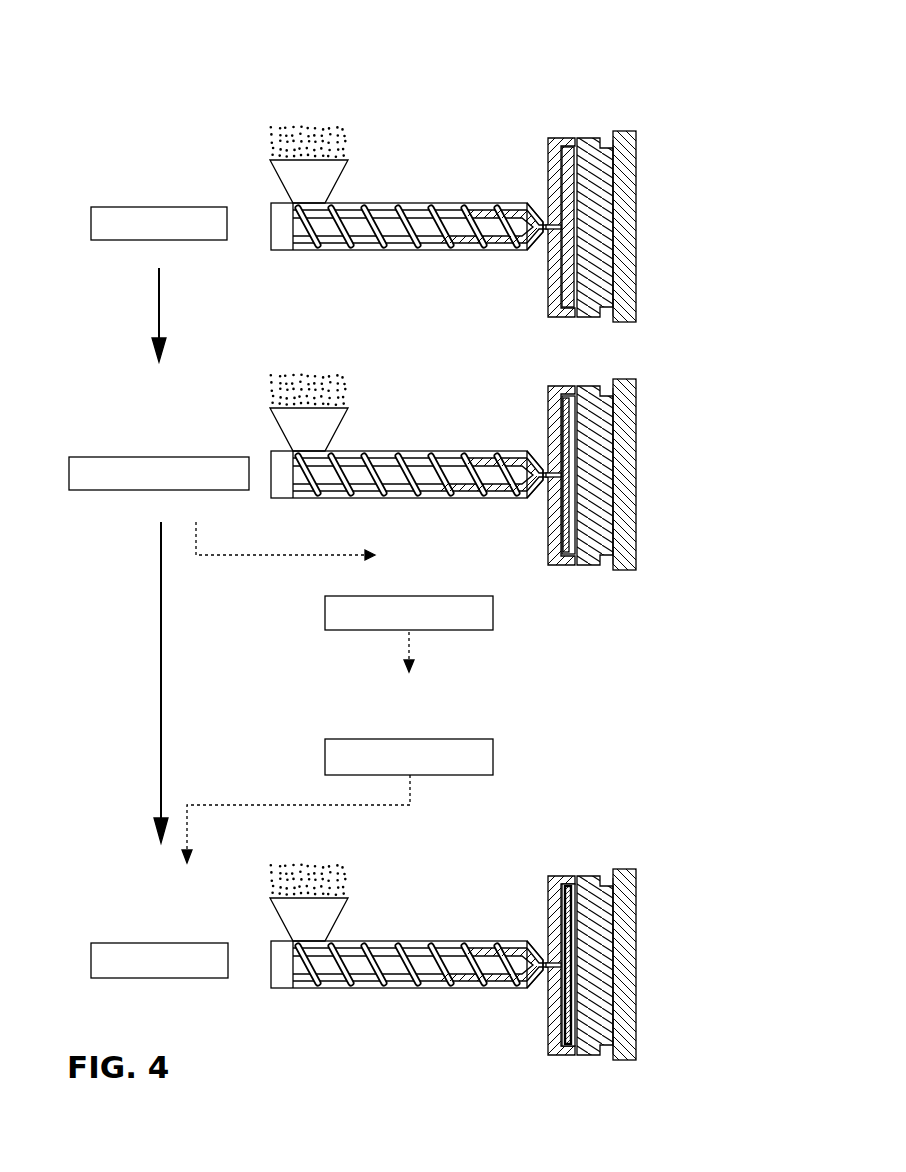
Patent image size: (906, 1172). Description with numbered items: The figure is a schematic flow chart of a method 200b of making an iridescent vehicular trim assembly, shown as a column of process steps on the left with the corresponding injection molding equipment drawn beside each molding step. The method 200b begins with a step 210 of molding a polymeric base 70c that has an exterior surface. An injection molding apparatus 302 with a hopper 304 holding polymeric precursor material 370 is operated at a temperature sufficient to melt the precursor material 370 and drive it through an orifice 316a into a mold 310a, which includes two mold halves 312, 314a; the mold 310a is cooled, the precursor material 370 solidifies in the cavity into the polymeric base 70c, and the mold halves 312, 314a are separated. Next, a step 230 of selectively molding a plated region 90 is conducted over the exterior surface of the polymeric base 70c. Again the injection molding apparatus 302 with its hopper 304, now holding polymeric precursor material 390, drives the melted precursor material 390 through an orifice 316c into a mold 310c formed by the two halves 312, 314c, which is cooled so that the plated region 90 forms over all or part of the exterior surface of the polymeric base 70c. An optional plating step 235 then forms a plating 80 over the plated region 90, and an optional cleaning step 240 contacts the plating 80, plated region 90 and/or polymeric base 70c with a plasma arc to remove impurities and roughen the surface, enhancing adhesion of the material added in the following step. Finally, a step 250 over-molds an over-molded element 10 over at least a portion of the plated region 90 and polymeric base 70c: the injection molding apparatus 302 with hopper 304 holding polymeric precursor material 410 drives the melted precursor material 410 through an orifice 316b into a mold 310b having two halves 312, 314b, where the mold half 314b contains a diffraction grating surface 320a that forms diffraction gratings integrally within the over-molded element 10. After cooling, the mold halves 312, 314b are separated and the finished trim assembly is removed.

The method of making an iridescent trim assembly 200b is at (712, 143).
The step of molding a polymeric base 210 is at (159, 207).
The step of selectively molding a plated region 230 is at (159, 457).
The plating step 235 is at (409, 596).
The cleaning step 240 is at (409, 739).
The step of over-molding an over-molded element 250 is at (159, 943).
The injection molding apparatus 302 is at (383, 203).
The hopper 304 is at (342, 176).
The mold 310a is at (609, 138).
The mold 310b is at (609, 876).
The mold 310c is at (609, 386).
The mold half 312 is at (580, 138).
The mold half 314a is at (557, 138).
The mold half 314b is at (557, 876).
The mold half 314c is at (557, 386).
The orifice 316a is at (548, 222).
The orifice 316b is at (547, 962).
The orifice 316c is at (547, 472).
The diffraction grating surface 320a is at (553, 933).
The polymeric precursor material 370 is at (500, 250).
The polymeric precursor material 390 is at (503, 498).
The polymeric precursor material 410 is at (500, 990).
The polymeric base 70c is at (614, 250).
The plated region 90 is at (555, 520).
The plating 80 is at (570, 1052).
The over-molded element 10 is at (566, 1050).